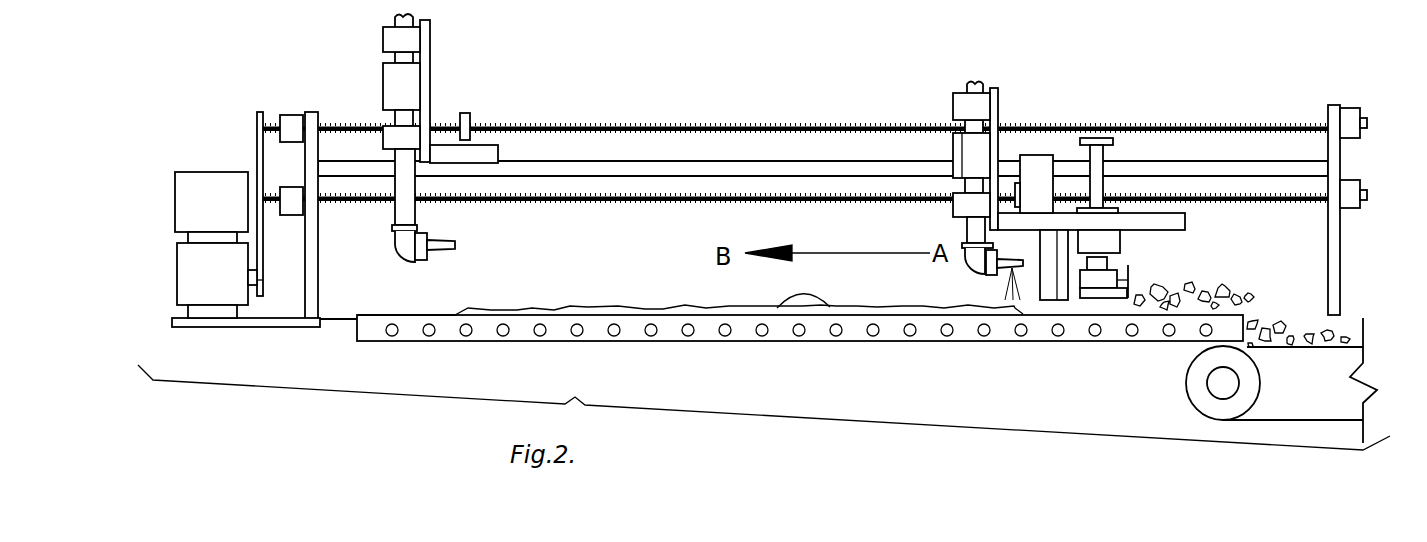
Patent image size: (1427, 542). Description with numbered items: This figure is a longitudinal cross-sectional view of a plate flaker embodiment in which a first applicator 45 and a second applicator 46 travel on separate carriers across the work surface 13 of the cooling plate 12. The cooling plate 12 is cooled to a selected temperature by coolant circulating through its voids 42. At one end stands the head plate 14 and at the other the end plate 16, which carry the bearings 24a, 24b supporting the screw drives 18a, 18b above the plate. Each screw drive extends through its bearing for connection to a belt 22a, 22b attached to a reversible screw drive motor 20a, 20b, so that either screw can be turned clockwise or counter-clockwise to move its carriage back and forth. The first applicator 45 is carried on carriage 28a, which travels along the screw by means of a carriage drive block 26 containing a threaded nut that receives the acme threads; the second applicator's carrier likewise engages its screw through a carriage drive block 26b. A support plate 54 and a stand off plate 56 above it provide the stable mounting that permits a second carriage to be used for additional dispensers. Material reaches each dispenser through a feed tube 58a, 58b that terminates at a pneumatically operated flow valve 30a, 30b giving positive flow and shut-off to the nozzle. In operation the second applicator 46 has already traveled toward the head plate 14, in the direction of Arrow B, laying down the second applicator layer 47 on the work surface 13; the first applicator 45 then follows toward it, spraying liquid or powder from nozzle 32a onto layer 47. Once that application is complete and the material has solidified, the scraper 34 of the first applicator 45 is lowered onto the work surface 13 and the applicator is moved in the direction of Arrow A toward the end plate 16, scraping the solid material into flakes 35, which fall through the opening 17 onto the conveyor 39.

The cooling plate 12 is at (660, 338).
The work surface 13 is at (422, 315).
The head plate 14 is at (312, 314).
The end plate 16 is at (1333, 283).
The opening 17 is at (1312, 335).
The screw drive 18a is at (738, 191).
The screw drive 18b is at (777, 120).
The screw drive motor 20a is at (182, 258).
The screw drive motor 20b is at (198, 182).
The belt 22a is at (262, 298).
The belt 22b is at (256, 166).
The bearing 24a is at (290, 123).
The bearing 24b is at (1360, 182).
The carriage drive block 26 is at (1017, 180).
The carriage drive block 26b is at (461, 114).
The carriage 28a is at (1048, 292).
The flow valve 30a is at (975, 150).
The flow valve 30b is at (403, 82).
The nozzle 32a is at (1005, 272).
The scraper 34 is at (1122, 292).
The flakes 35 is at (1250, 262).
The conveyor 39 is at (1210, 403).
The voids 42 is at (760, 338).
The first applicator 45 is at (935, 273).
The second applicator 46 is at (433, 248).
The second applicator layer 47 is at (777, 308).
The support plate 54 is at (1270, 165).
The stand off plate 56 is at (567, 134).
The feed tube 58a is at (977, 108).
The feed tube 58b is at (405, 40).